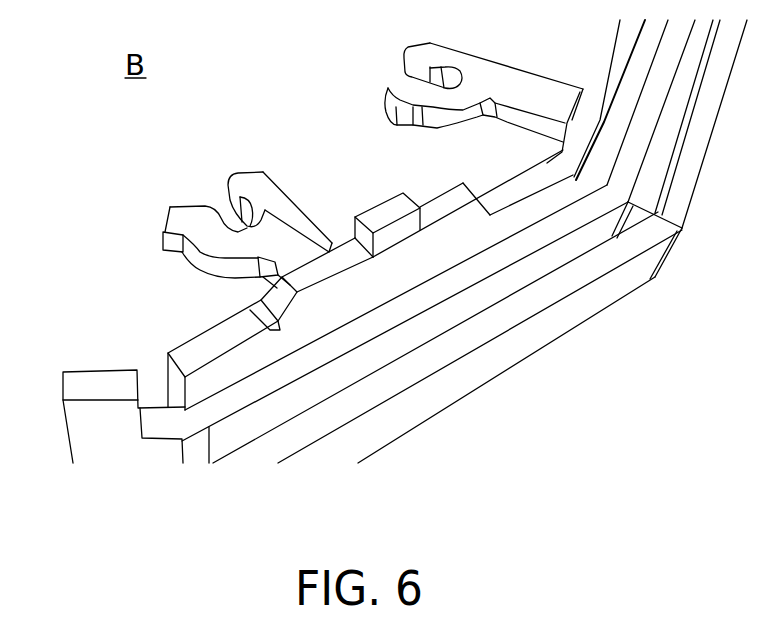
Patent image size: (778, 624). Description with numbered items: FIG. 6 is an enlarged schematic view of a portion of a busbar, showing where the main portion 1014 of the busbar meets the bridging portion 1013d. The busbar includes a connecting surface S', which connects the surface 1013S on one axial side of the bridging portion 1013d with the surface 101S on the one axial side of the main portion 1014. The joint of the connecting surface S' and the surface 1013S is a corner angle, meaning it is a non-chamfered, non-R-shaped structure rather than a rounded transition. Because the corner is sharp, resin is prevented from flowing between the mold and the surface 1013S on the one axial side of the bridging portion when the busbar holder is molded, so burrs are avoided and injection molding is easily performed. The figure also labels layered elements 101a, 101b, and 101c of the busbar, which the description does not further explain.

The main portion 1014 is at (167, 349).
The surface of the one axial side of the main portion 101S is at (246, 330).
The surface of the one axial side of the bridging portion 1013S is at (328, 262).
The connecting surface S' is at (226, 214).
The bridging portion 1013d is at (450, 297).
The first layer 101a is at (405, 339).
The second layer 101b is at (435, 337).
The third layer 101c is at (495, 346).